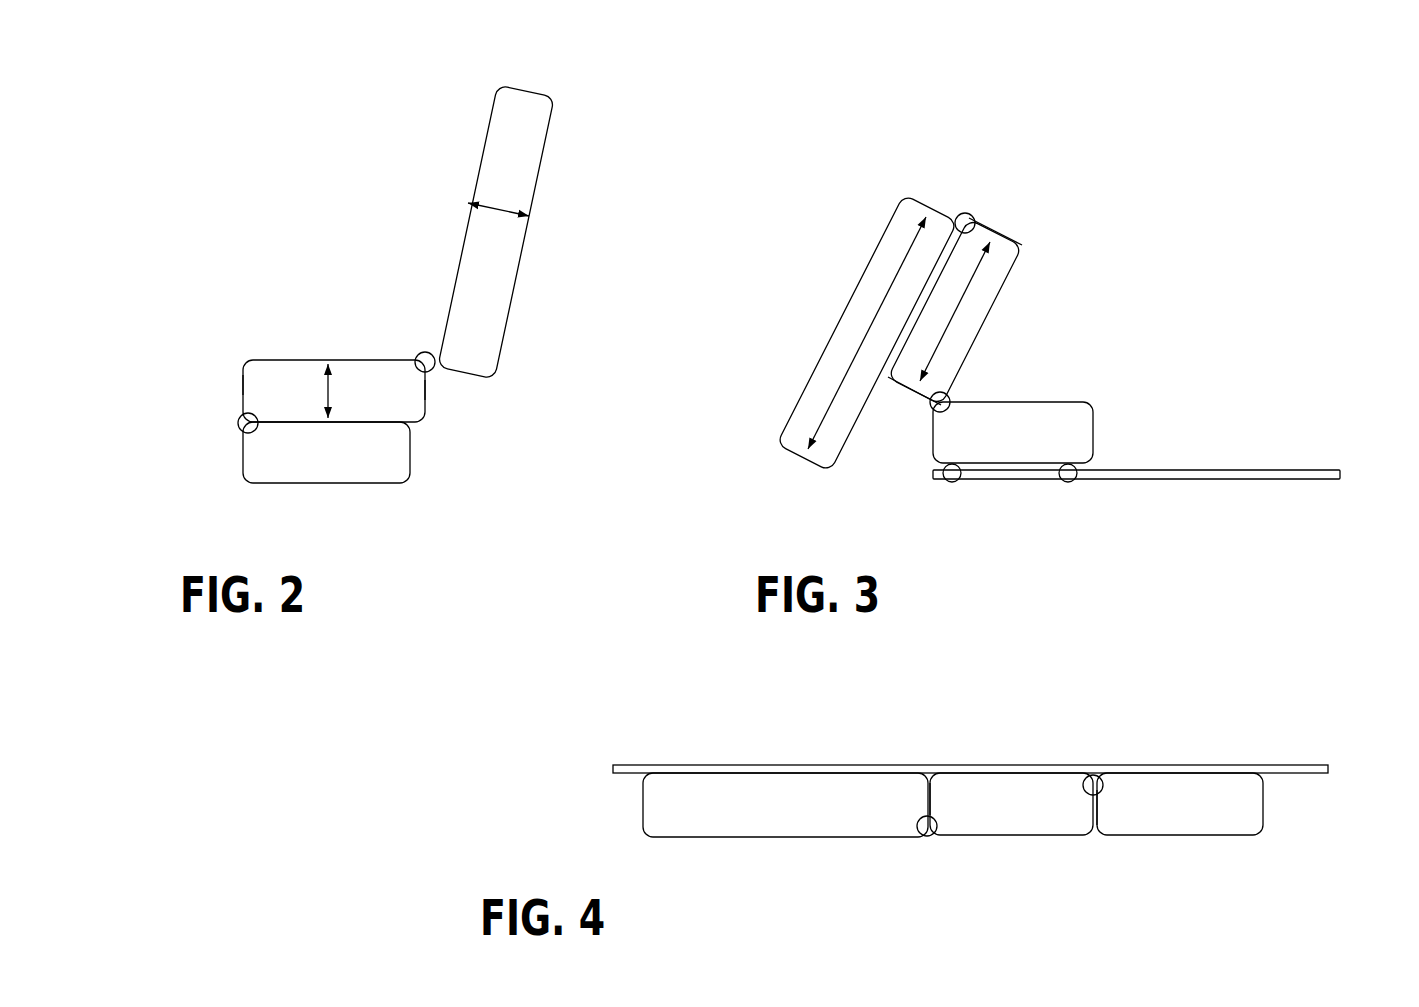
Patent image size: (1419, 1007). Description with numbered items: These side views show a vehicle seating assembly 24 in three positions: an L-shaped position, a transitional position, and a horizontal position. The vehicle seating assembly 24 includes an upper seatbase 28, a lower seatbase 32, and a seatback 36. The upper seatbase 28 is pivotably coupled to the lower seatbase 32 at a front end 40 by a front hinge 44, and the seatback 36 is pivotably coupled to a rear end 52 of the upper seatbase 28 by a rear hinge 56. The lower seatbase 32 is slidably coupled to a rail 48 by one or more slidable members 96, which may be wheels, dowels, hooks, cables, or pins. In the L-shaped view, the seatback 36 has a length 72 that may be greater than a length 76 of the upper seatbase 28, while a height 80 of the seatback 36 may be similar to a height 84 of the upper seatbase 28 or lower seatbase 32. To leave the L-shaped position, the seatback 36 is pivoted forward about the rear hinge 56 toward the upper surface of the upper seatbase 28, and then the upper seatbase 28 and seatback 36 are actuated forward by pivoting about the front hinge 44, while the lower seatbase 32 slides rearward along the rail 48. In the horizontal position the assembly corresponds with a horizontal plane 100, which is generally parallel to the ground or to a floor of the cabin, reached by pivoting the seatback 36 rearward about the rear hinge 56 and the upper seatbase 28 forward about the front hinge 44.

In FIG. 2, the vehicle seating assembly 24 is at (287, 157).
In FIG. 3, the vehicle seating assembly 24 is at (1112, 230).
In FIG. 4, the vehicle seating assembly 24 is at (1310, 835).
In FIG. 2, the upper seatbase 28 is at (297, 370).
In FIG. 3, the upper seatbase 28 is at (1002, 258).
In FIG. 4, the upper seatbase 28 is at (1022, 815).
In FIG. 2, the lower seatbase 32 is at (360, 460).
In FIG. 3, the lower seatbase 32 is at (1045, 410).
In FIG. 4, the lower seatbase 32 is at (1218, 815).
In FIG. 2, the seatback 36 is at (523, 103).
In FIG. 3, the seatback 36 is at (818, 382).
In FIG. 4, the seatback 36 is at (773, 813).
In FIG. 2, the front end 40 is at (243, 383).
In FIG. 3, the front end 40 is at (893, 373).
In FIG. 4, the front end 40 is at (1097, 810).
In FIG. 2, the front hinge 44 is at (250, 423).
In FIG. 3, the front hinge 44 is at (932, 412).
In FIG. 4, the front hinge 44 is at (1093, 785).
In FIG. 3, the rail 48 is at (1337, 470).
In FIG. 2, the rear end 52 is at (428, 393).
In FIG. 3, the rear end 52 is at (993, 226).
In FIG. 4, the rear end 52 is at (932, 797).
In FIG. 2, the rear hinge 56 is at (425, 360).
In FIG. 3, the rear hinge 56 is at (967, 215).
In FIG. 4, the rear hinge 56 is at (925, 835).
In FIG. 3, the length of the seatback 72 is at (895, 275).
In FIG. 3, the length of the upper seatbase 76 is at (962, 292).
In FIG. 2, the height of the seatback 80 is at (489, 207).
In FIG. 2, the height of the upper seatbase 84 is at (330, 388).
In FIG. 3, the slidable members 96 is at (952, 482).
In FIG. 4, the horizontal plane 100 is at (1323, 765).